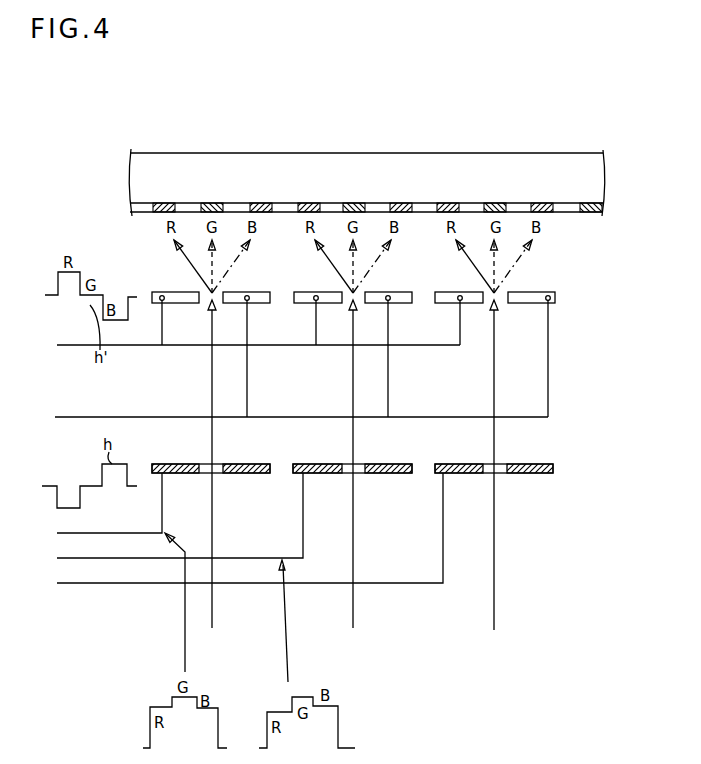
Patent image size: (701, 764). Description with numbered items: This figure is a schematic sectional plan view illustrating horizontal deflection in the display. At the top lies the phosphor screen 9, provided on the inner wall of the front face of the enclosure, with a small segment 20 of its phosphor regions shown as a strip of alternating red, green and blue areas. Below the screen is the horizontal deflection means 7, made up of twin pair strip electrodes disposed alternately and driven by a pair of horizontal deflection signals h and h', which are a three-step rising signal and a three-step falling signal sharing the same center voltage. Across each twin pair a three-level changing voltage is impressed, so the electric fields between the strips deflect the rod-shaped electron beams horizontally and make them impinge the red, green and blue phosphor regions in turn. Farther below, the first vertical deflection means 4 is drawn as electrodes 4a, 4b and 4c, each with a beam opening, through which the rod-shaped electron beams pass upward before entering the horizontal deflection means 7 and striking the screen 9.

The phosphor screen 9 is at (603, 172).
The small segment 20 is at (603, 210).
The horizontal deflection means 7 is at (555, 298).
The first vertical deflection means 4 is at (326, 522).
The first control electrode 4a is at (163, 498).
The second control electrode 4b is at (234, 511).
The third control electrode 4c is at (305, 523).